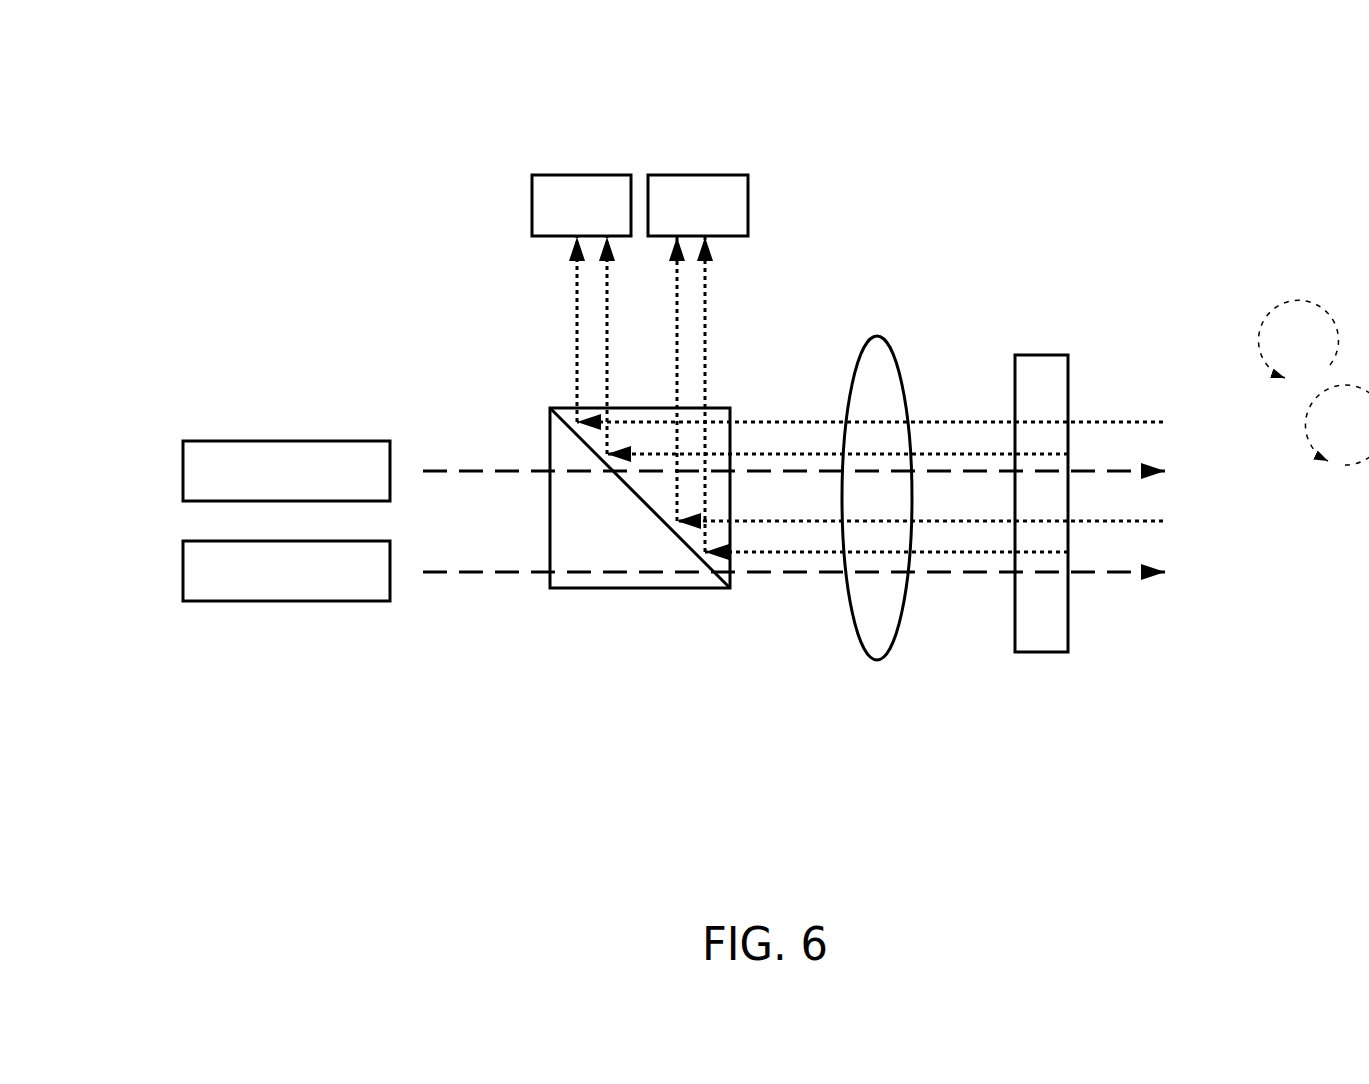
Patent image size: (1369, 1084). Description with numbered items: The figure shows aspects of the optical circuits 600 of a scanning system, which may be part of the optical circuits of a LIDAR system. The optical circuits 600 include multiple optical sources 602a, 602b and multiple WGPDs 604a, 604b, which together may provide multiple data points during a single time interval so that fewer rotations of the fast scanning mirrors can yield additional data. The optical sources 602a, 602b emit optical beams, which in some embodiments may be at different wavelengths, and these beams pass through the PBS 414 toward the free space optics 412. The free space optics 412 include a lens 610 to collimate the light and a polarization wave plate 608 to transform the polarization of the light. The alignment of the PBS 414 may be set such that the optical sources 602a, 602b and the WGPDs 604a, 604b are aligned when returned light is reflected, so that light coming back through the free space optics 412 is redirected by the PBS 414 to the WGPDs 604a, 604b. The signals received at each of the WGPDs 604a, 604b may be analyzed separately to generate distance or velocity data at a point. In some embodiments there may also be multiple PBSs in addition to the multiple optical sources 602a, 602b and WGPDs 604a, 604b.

The optical circuits 600 is at (129, 100).
The optical source 602a is at (241, 440).
The optical source 602b is at (229, 602).
The PBS 414 is at (549, 407).
The WGPD 604a is at (530, 174).
The WGPD 604b is at (749, 174).
The lens 610 is at (873, 334).
The polarization wave plate 608 is at (983, 442).
The free space optics 412 is at (924, 520).